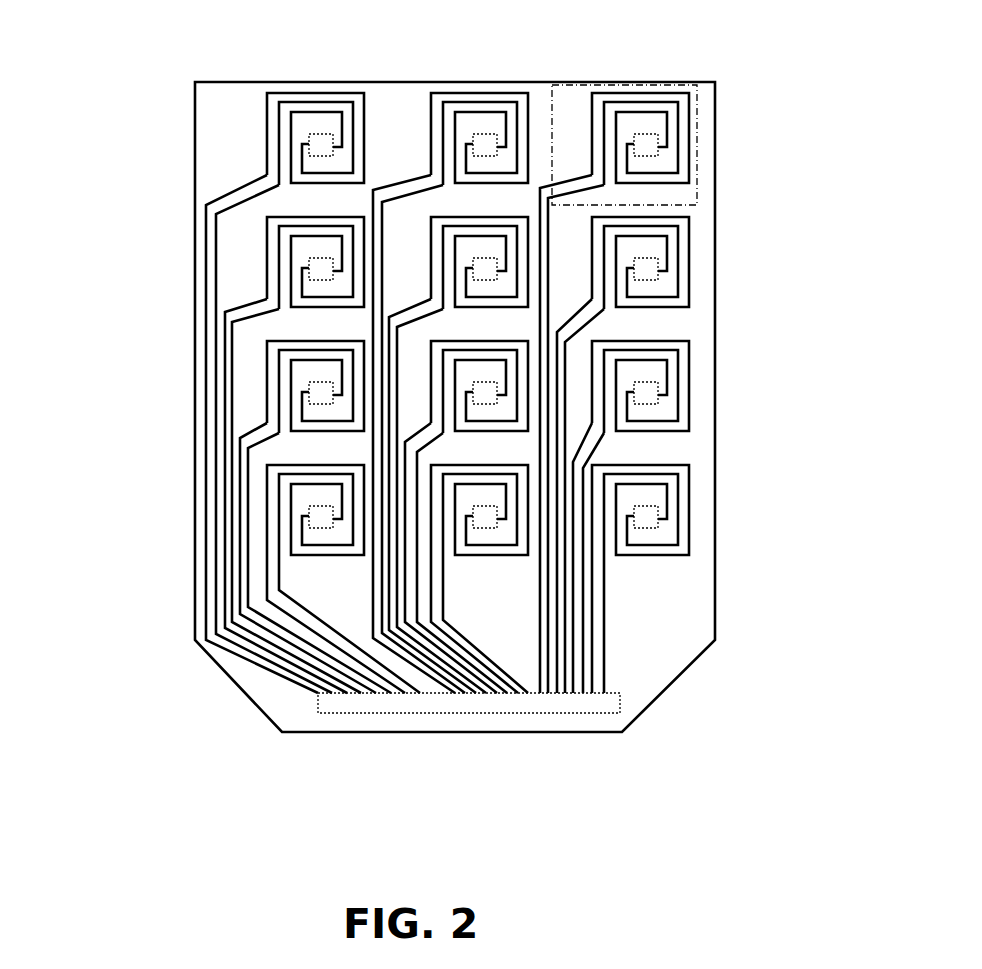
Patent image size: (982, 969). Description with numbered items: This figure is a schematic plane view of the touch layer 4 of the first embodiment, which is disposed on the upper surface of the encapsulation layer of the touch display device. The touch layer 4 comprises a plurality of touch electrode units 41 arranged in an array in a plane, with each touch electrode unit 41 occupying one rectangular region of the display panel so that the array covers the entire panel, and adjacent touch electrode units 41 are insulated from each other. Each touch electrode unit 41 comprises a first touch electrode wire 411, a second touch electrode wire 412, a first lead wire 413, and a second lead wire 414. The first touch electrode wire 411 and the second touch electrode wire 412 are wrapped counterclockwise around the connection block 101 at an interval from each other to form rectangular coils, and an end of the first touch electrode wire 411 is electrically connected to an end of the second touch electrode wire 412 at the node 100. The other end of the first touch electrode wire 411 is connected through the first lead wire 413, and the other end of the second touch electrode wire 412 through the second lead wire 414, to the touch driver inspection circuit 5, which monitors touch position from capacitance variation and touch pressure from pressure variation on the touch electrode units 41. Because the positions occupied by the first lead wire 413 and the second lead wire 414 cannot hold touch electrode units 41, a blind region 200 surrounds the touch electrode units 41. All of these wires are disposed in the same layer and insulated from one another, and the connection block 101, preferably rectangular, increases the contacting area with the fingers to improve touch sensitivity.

The touch layer 4 is at (228, 36).
The blind region 200 is at (400, 105).
The touch electrode unit 41 is at (697, 177).
The first touch electrode wire 411 is at (713, 267).
The second touch electrode wire 412 is at (707, 265).
The node 100 is at (699, 389).
The connection block 101 is at (720, 410).
The second lead wire 414 is at (203, 212).
The first lead wire 413 is at (213, 252).
The touch driver inspection circuit 5 is at (620, 694).